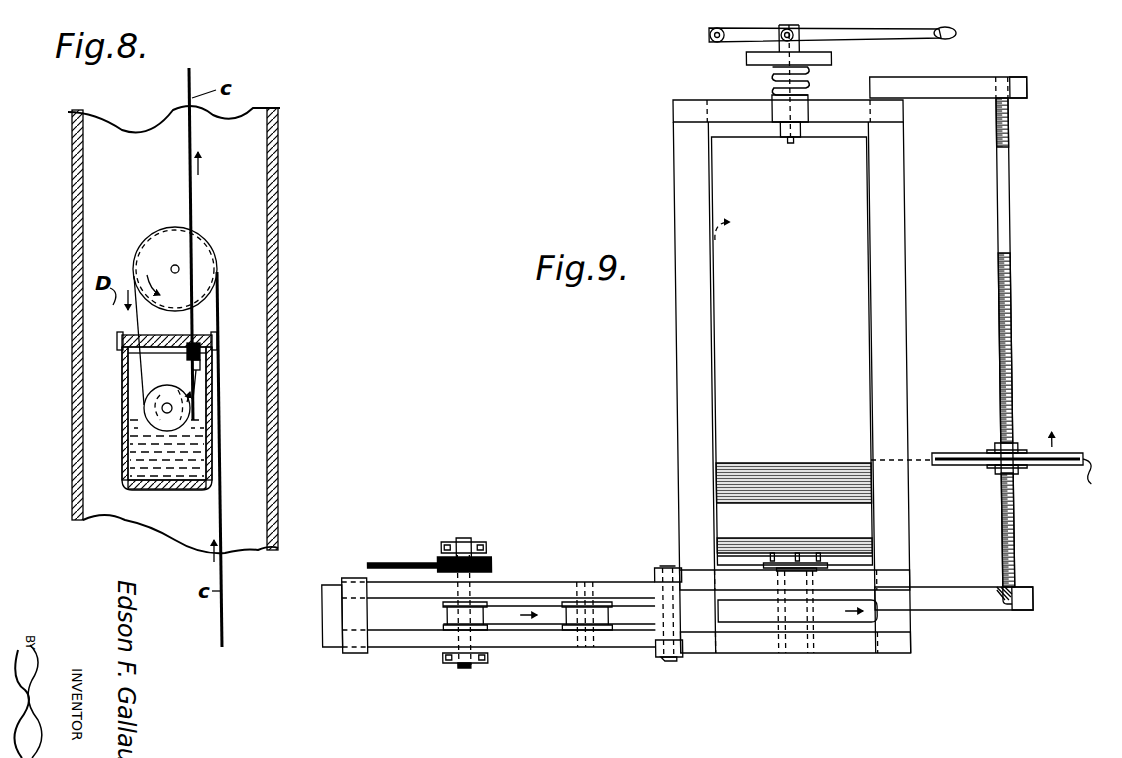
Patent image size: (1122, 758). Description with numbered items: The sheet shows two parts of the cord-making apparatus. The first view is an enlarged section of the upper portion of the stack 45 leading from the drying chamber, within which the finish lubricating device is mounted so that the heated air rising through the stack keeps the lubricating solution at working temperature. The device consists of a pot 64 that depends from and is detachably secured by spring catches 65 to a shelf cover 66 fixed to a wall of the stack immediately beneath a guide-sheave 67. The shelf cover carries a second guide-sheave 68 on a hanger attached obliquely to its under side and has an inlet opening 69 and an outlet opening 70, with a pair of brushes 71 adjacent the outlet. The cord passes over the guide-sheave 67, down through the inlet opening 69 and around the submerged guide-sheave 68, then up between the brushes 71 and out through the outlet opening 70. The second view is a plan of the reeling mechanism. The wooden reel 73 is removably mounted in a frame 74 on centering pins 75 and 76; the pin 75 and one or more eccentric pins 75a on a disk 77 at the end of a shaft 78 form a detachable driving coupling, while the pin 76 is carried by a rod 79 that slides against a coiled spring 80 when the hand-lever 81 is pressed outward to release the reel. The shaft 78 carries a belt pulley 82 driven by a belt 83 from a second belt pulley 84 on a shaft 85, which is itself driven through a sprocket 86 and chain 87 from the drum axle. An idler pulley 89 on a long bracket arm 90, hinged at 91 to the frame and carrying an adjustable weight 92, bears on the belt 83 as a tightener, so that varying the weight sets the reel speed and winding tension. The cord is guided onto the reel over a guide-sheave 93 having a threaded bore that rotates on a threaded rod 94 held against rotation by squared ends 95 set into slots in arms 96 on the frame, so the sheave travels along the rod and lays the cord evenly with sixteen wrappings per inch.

In FIG. 8, the stack 45 is at (258, 402).
In FIG. 8, the pot 64 is at (123, 425).
In FIG. 8, the spring catches 65 is at (118, 338).
In FIG. 8, the shelf cover 66 is at (173, 328).
In FIG. 8, the guide-sheave 67 is at (200, 246).
In FIG. 8, the guide-sheave 68 is at (175, 430).
In FIG. 8, the inlet opening 69 is at (135, 350).
In FIG. 8, the outlet opening 70 is at (194, 343).
In FIG. 8, the brushes 71 is at (203, 372).
In FIG. 9, the reel 73 is at (842, 325).
In FIG. 9, the frame 74 is at (698, 364).
In FIG. 9, the centering pin 75 is at (792, 552).
In FIG. 9, the eccentric pins 75a is at (766, 552).
In FIG. 9, the centering pin 76 is at (789, 146).
In FIG. 9, the disk 77 is at (816, 568).
In FIG. 9, the shaft 78 is at (786, 625).
In FIG. 9, the rod 79 is at (788, 128).
In FIG. 9, the coiled spring 80 is at (808, 82).
In FIG. 9, the hand-lever 81 is at (860, 36).
In FIG. 9, the belt pulley 82 is at (828, 625).
In FIG. 9, the belt 83 is at (695, 615).
In FIG. 9, the belt pulley 84 is at (441, 630).
In FIG. 9, the shaft 85 is at (460, 602).
In FIG. 9, the sprocket 86 is at (482, 558).
In FIG. 9, the chain 87 is at (396, 560).
In FIG. 9, the idler pulley 89 is at (578, 613).
In FIG. 9, the bracket arm 90 is at (518, 638).
In FIG. 9, the hinge 91 is at (660, 568).
In FIG. 9, the adjustable weight 92 is at (350, 625).
In FIG. 9, the guide-sheave 93 is at (1055, 453).
In FIG. 9, the threaded rod 94 is at (1011, 415).
In FIG. 9, the squared ends 95 is at (1015, 75).
In FIG. 9, the arms 96 is at (957, 88).